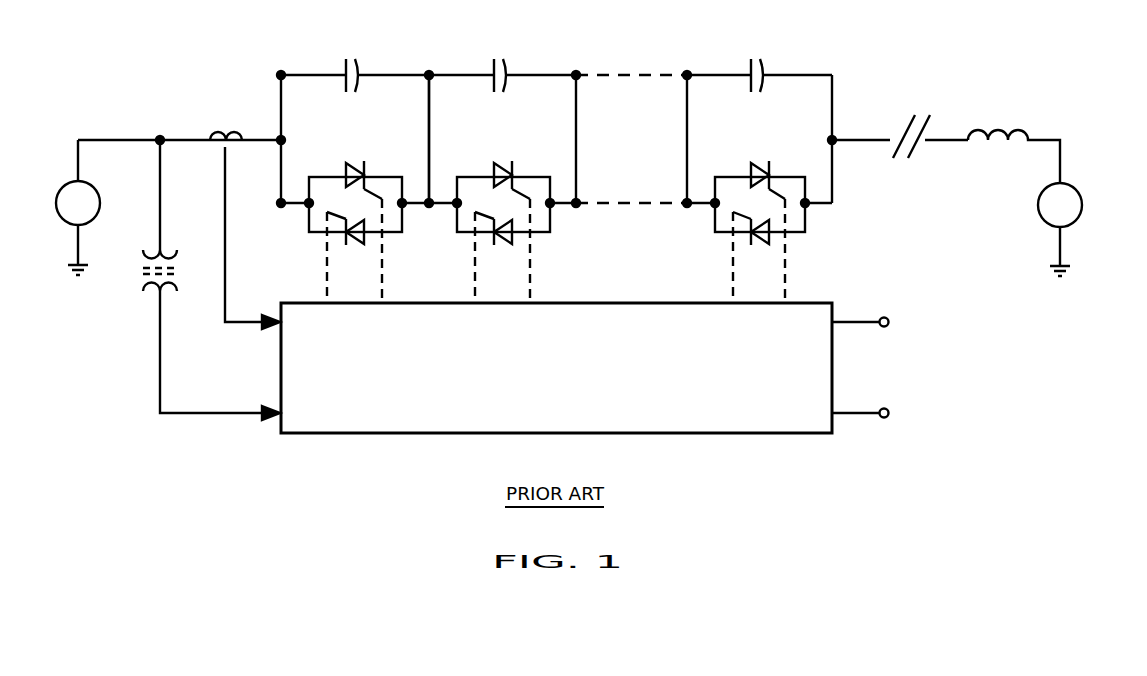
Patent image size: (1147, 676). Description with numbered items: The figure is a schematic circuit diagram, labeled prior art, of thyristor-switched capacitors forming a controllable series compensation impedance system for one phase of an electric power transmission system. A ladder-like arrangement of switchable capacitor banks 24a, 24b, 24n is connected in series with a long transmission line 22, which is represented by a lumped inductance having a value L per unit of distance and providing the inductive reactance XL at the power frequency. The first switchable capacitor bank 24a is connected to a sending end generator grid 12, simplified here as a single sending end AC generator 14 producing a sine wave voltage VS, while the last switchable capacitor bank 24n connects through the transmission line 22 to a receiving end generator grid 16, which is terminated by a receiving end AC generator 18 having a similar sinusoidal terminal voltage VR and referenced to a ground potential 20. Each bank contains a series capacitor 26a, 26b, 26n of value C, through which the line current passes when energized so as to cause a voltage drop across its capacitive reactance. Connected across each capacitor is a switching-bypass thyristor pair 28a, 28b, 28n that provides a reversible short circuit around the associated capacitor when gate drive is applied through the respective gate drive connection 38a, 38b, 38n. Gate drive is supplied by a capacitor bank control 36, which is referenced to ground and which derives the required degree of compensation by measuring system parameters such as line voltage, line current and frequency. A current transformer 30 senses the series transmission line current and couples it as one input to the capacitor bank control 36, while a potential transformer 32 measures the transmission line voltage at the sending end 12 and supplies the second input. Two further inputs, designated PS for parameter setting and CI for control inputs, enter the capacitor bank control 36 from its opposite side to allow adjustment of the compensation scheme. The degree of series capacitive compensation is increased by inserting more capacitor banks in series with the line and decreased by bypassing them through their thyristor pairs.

The sending end generator grid 12 is at (43, 125).
The sending end AC generator 14 is at (57, 207).
The receiving end generator grid 16 is at (1107, 133).
The receiving end AC generator 18 is at (1082, 213).
The receiving end generator reference ground potential 20 is at (1066, 268).
The transmission line 22 is at (997, 148).
The first switchable capacitor bank 24a is at (355, 164).
The switchable capacitor bank 24b is at (504, 164).
The last switchable capacitor bank 24n is at (759, 164).
The series capacitor 26a is at (344, 66).
The series capacitor 26b is at (492, 66).
The series capacitor 26n is at (749, 66).
The switching-bypass thyristor pair 28a is at (358, 225).
The switching-bypass thyristor pair 28b is at (506, 225).
The switching-bypass thyristor pair 28n is at (763, 225).
The current transformer 30 is at (234, 148).
The potential transformer 32 is at (178, 272).
The capacitor bank control circuit 36 is at (660, 433).
The gate drive connection 38a is at (377, 270).
The gate drive connection 38b is at (525, 270).
The gate drive connection 38n is at (780, 270).